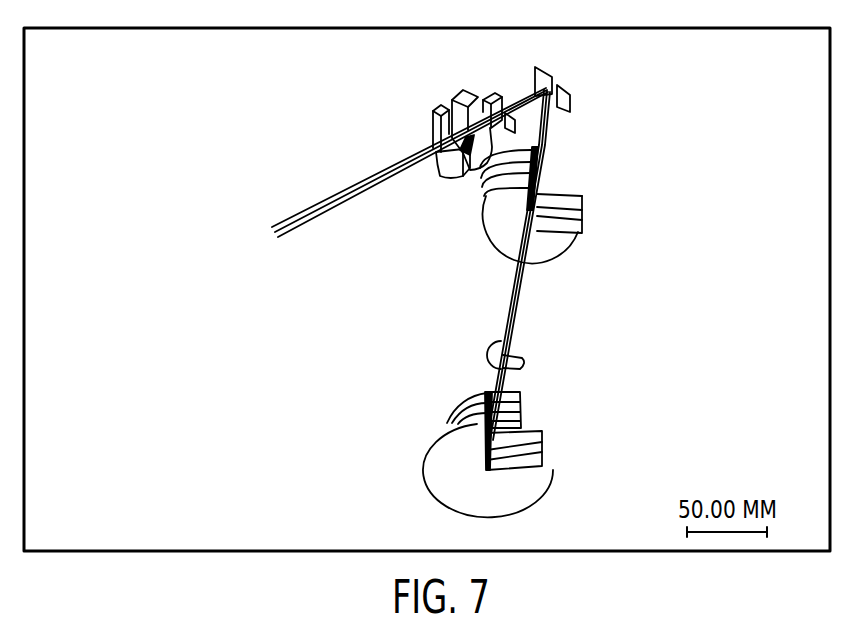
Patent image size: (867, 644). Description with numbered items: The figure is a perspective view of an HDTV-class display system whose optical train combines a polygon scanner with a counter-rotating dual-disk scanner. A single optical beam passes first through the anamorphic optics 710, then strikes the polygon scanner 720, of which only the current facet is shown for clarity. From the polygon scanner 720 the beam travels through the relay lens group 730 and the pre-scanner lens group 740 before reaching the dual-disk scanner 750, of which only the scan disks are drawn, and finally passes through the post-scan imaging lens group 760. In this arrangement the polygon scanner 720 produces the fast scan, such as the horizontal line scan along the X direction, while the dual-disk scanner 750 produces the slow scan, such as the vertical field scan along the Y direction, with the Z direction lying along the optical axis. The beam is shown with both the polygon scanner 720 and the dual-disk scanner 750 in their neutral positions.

The anamorphic optics 710 is at (497, 72).
The polygon scanner 720 is at (562, 82).
The relay lens group 730 is at (587, 185).
The pre-scanner lens group 740 is at (523, 392).
The dual-disk scanner 750 is at (547, 423).
The post-scan imaging lens group 760 is at (530, 503).